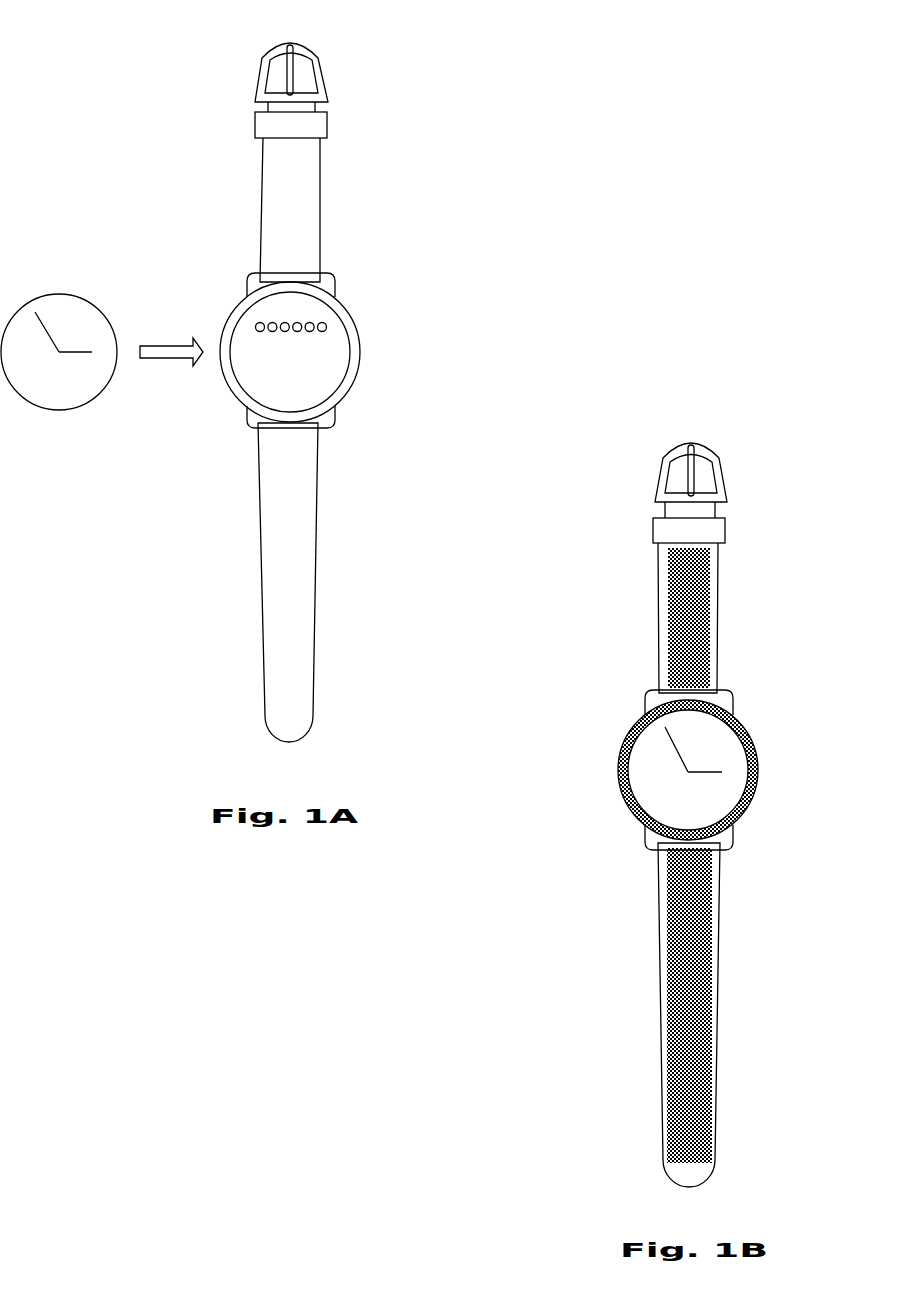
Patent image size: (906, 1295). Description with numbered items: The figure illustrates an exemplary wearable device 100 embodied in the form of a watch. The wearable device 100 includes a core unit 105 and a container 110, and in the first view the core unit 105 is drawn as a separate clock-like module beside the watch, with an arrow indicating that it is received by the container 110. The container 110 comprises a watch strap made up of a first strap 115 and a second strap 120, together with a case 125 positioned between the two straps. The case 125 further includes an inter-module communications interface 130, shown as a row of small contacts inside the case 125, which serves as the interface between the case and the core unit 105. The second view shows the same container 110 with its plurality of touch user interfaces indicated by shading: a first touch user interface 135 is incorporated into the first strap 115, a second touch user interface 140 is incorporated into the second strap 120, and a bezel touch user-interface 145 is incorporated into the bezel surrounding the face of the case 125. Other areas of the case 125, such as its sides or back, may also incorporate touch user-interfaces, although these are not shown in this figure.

In FIG. 1A, the wearable device 100 is at (63, 56).
In FIG. 1B, the wearable device 100 is at (812, 439).
In FIG. 1A, the core unit 105 is at (98, 306).
In FIG. 1A, the container 110 is at (438, 247).
In FIG. 1B, the container 110 is at (558, 894).
In FIG. 1A, the first strap 115 is at (261, 228).
In FIG. 1A, the second strap 120 is at (316, 505).
In FIG. 1A, the case 125 is at (238, 395).
In FIG. 1A, the inter-module communications interface 130 is at (329, 325).
In FIG. 1B, the first touch user interface 135 is at (710, 606).
In FIG. 1B, the second touch user interface 140 is at (700, 896).
In FIG. 1B, the bezel touch user-interface 145 is at (620, 772).